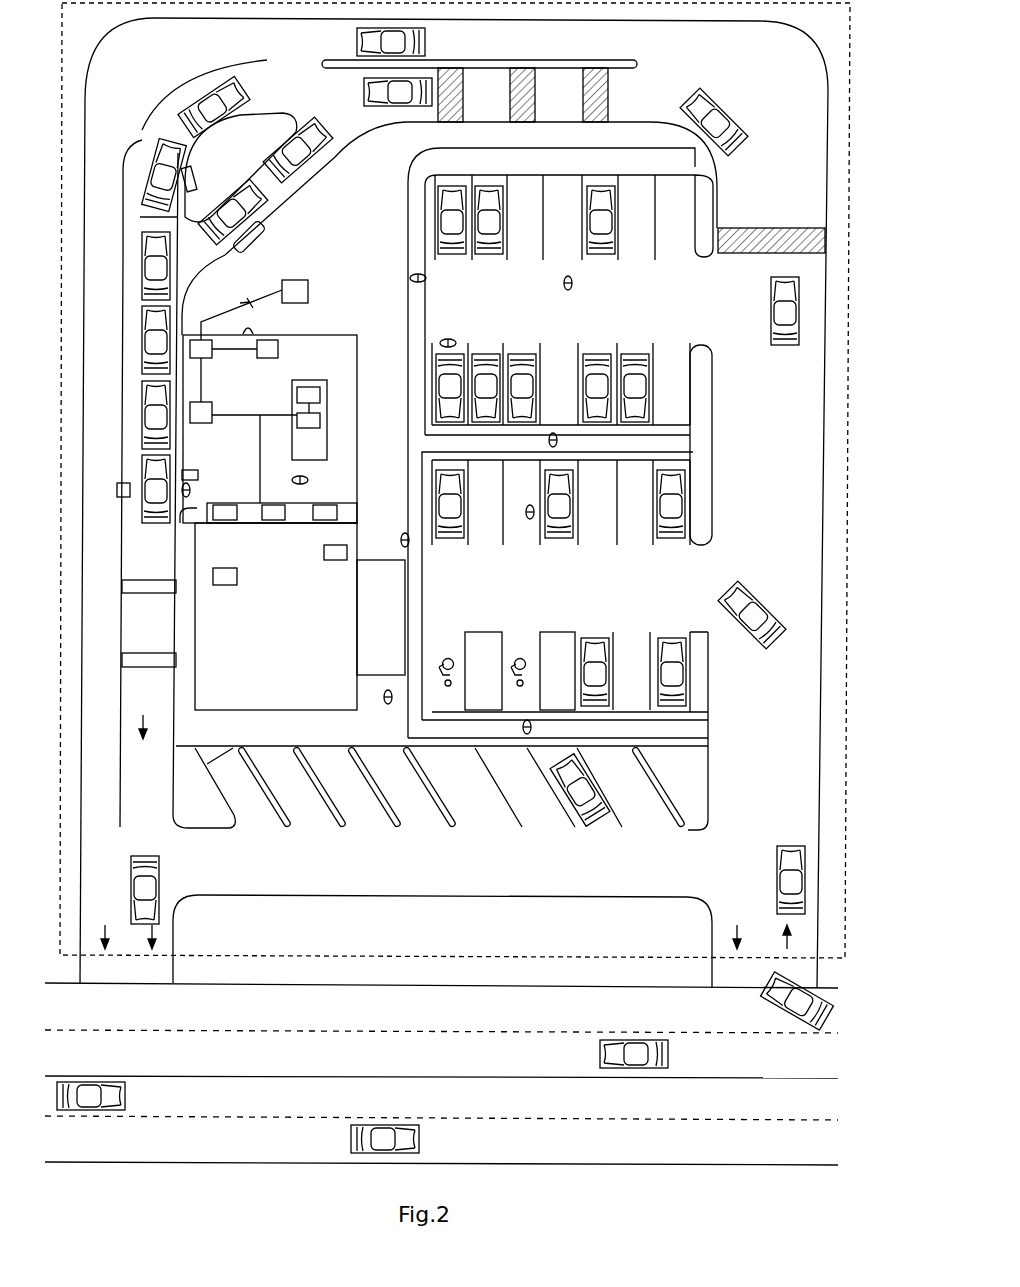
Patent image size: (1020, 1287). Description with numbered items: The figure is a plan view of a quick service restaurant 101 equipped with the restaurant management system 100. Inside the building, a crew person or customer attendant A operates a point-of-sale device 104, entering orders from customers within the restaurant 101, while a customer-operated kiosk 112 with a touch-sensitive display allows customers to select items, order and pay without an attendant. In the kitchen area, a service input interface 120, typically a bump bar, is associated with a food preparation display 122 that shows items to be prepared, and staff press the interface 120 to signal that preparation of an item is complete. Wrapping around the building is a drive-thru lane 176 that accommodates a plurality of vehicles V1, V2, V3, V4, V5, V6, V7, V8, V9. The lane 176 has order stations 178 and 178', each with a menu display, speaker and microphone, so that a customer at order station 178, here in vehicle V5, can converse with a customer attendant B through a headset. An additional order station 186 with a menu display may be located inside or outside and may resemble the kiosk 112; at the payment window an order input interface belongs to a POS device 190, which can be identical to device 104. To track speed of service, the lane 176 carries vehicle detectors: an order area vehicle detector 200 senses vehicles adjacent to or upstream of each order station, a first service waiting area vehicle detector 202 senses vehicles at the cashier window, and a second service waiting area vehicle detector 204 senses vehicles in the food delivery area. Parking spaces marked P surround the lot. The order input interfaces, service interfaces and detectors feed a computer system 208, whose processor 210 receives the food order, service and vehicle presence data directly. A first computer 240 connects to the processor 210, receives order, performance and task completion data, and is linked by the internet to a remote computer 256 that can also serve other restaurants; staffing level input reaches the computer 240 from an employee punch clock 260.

The restaurant management system 100 is at (274, 530).
The restaurant 101 is at (345, 328).
The point-of-sale device 104 is at (269, 505).
The customer-operated kiosk 112 is at (337, 561).
The service input interface 120 is at (320, 396).
The food preparation display 122 is at (320, 422).
The drive-thru lane 176 is at (501, 105).
The order station 178 is at (278, 237).
The order station 178' is at (211, 162).
The order station 186 is at (237, 577).
The POS device 190 is at (198, 474).
The order area vehicle detector 200 is at (157, 170).
The first service waiting area vehicle detector 202 is at (120, 490).
The second service waiting area vehicle detector 204 is at (122, 585).
The computer system 208 is at (208, 394).
The processor 210 is at (203, 412).
The first computer 240 is at (212, 350).
The computer 256 is at (290, 283).
The punch clock 260 is at (278, 351).
The customer attendant A is at (308, 480).
The customer attendant B is at (190, 492).
The parking space sign P is at (452, 338).
The vehicle V1 is at (398, 95).
The vehicle V2 is at (218, 98).
The vehicle V3 is at (150, 173).
The vehicle V4 is at (300, 150).
The vehicle V5 is at (248, 200).
The vehicle V6 is at (157, 258).
The vehicle V7 is at (150, 335).
The vehicle V8 is at (150, 417).
The vehicle V9 is at (153, 483).